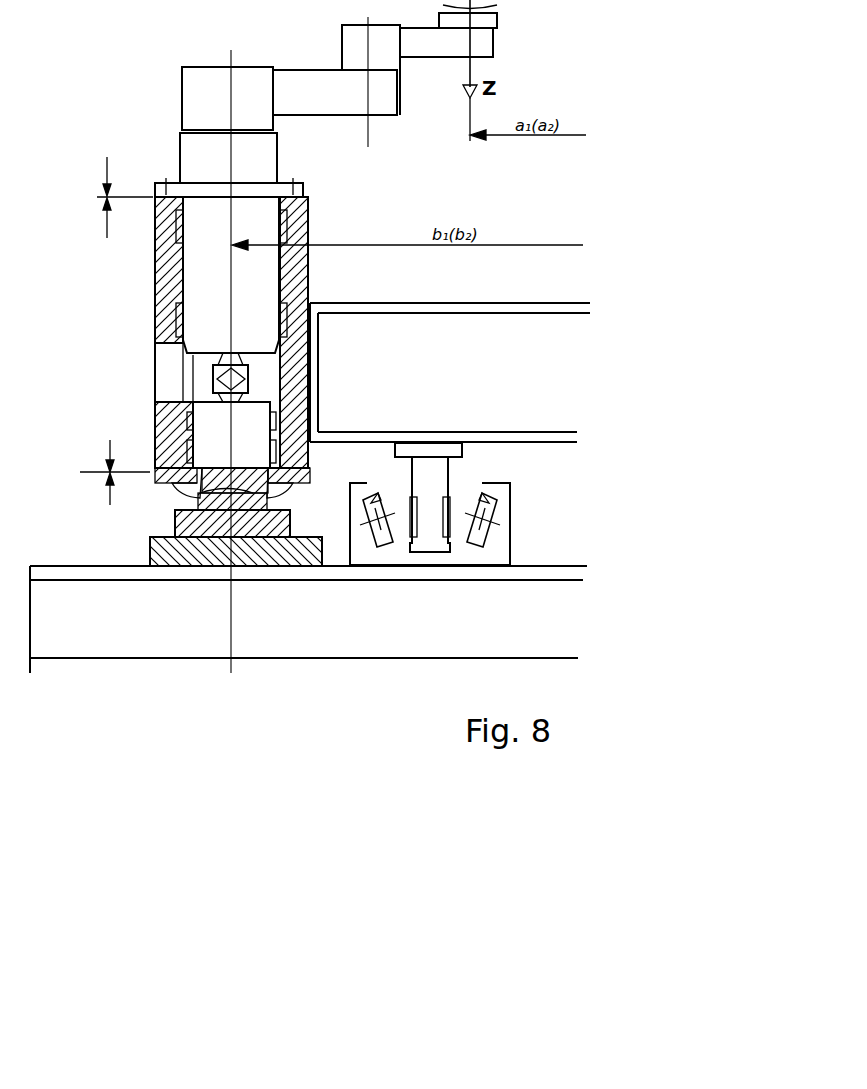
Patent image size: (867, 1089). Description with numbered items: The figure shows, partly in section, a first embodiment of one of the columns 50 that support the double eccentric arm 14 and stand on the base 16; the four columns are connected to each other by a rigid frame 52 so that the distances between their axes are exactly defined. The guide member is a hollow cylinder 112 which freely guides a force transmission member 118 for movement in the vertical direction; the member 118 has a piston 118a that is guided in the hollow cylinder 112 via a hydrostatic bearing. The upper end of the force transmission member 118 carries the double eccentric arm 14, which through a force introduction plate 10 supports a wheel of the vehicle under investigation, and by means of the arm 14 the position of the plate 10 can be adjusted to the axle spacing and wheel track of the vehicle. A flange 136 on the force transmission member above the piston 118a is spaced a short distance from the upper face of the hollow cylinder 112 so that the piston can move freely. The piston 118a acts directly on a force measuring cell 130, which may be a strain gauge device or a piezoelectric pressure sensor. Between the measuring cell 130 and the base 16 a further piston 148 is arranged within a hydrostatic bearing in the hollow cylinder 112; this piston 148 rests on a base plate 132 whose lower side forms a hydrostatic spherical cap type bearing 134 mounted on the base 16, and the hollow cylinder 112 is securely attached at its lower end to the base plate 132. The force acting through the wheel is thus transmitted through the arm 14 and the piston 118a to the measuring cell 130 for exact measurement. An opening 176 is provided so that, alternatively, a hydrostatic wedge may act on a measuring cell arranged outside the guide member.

The force introduction plate 10 is at (497, 22).
The double eccentric arm 14 is at (301, 52).
The base 16 is at (313, 572).
The column 50 is at (96, 265).
The rigid frame 52 is at (495, 432).
The guide member 112 is at (153, 303).
The force transmission member 118 is at (277, 155).
The piston 118a is at (263, 283).
The force measuring cell 130 is at (248, 378).
The base plate 132 is at (242, 468).
The hydrostatic spherical cap type bearing 134 is at (268, 502).
The flange 136 is at (303, 193).
The further piston 148 is at (212, 430).
The opening 176 is at (160, 377).